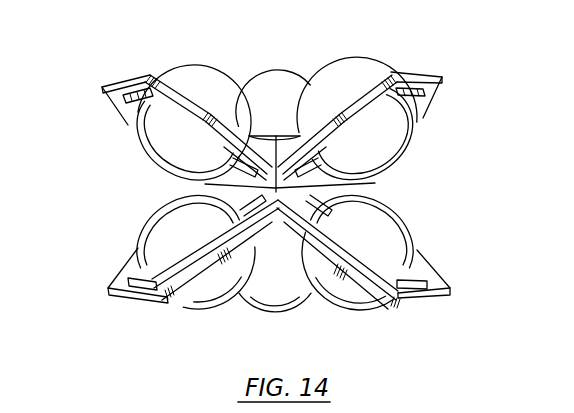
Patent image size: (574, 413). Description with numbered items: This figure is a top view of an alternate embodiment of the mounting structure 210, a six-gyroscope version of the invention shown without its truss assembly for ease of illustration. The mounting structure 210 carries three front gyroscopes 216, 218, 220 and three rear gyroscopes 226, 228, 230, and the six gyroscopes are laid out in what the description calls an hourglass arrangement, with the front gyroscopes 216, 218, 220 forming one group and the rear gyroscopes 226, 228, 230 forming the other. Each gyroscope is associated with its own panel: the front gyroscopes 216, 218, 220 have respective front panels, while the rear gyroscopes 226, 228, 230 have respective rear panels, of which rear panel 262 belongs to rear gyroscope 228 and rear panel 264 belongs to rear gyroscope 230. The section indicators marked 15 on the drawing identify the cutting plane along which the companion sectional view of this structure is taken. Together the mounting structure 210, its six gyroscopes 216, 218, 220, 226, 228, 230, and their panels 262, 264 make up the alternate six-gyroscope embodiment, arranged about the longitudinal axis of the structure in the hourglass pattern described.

The mounting structure 210 is at (468, 84).
The front gyroscope 216 is at (288, 305).
The front gyroscope 218 is at (203, 306).
The front gyroscope 220 is at (364, 300).
The rear gyroscope 226 is at (277, 78).
The rear gyroscope 228 is at (197, 67).
The rear gyroscope 230 is at (338, 62).
The rear panel 262 is at (123, 79).
The rear panel 264 is at (426, 73).
The section line 15 is at (118, 323).